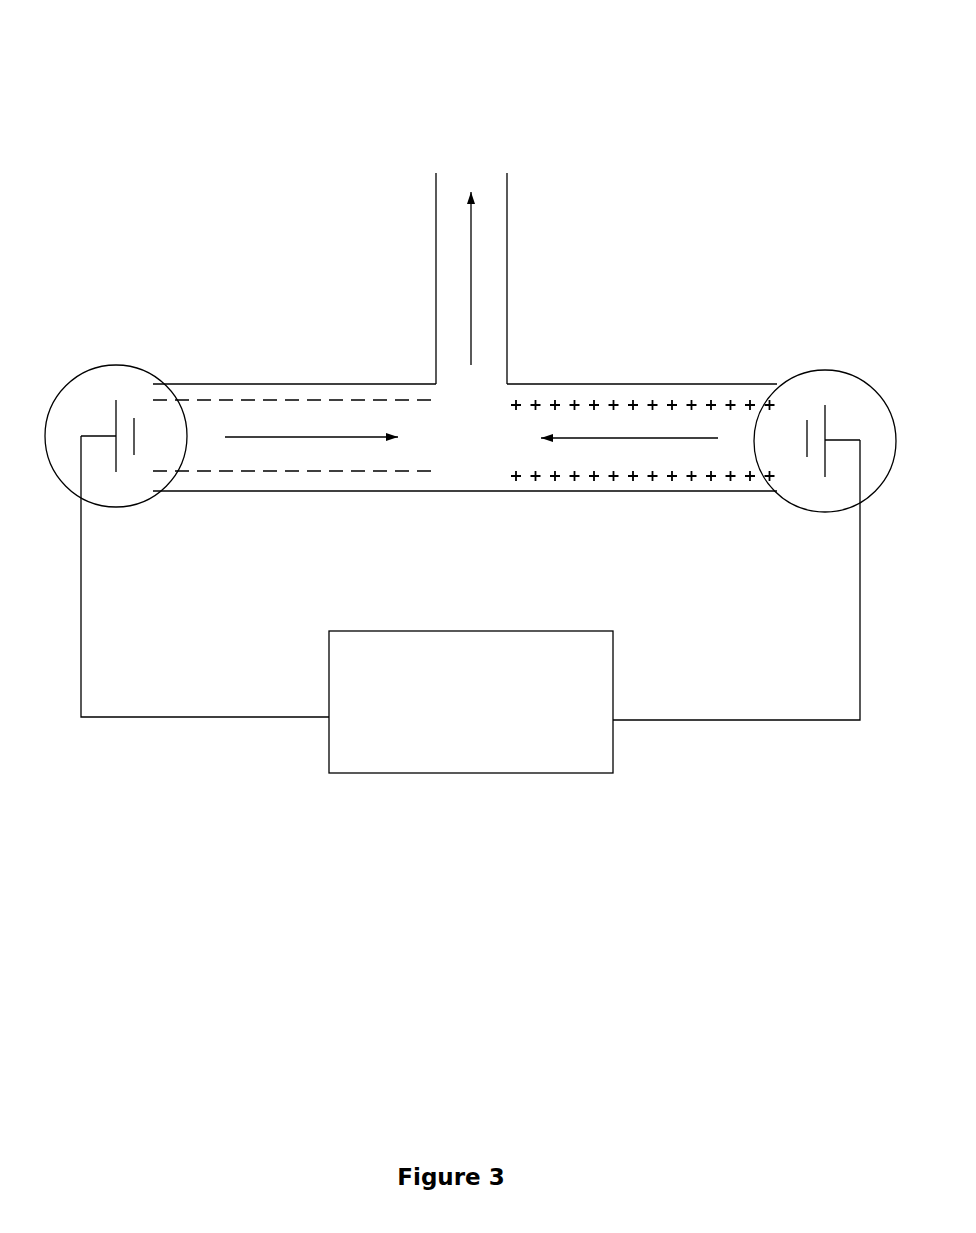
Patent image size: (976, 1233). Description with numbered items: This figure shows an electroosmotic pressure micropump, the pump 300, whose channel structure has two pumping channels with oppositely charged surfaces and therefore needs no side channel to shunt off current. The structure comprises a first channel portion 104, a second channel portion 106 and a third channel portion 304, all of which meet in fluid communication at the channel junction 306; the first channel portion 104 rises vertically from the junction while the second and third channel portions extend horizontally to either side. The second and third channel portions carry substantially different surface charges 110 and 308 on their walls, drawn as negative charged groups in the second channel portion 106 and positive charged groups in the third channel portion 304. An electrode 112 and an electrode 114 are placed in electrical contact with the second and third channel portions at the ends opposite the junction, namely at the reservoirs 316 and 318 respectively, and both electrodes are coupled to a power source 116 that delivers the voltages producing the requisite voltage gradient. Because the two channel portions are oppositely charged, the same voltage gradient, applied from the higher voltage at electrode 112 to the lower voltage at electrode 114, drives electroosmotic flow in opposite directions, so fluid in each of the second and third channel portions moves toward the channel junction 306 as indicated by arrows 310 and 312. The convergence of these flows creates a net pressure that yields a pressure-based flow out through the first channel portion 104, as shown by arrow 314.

The pump 300 is at (184, 102).
The first channel portion 104 is at (434, 207).
The second channel portion 106 is at (245, 382).
The third channel portion 304 is at (585, 382).
The channel junction 306 is at (472, 437).
The surface charge 110 is at (187, 393).
The surface charge 308 is at (647, 402).
The electrode 112 is at (105, 400).
The electrode 114 is at (824, 402).
The power source 116 is at (470, 604).
The arrow 310 is at (266, 440).
The arrow 312 is at (643, 443).
The arrow 314 is at (475, 248).
The reservoir 316 is at (63, 437).
The reservoir 318 is at (878, 418).